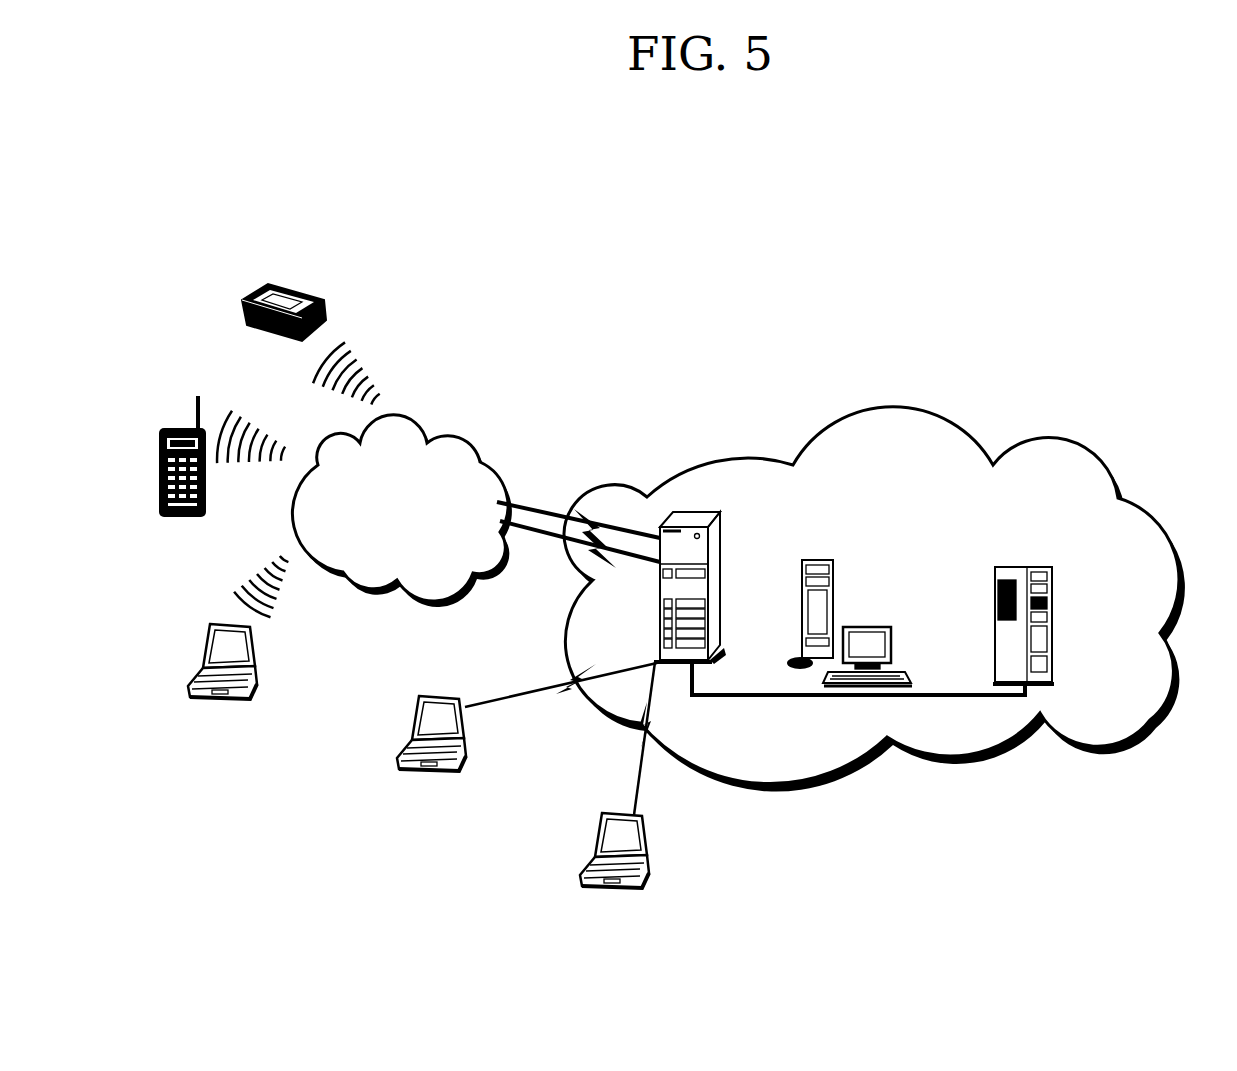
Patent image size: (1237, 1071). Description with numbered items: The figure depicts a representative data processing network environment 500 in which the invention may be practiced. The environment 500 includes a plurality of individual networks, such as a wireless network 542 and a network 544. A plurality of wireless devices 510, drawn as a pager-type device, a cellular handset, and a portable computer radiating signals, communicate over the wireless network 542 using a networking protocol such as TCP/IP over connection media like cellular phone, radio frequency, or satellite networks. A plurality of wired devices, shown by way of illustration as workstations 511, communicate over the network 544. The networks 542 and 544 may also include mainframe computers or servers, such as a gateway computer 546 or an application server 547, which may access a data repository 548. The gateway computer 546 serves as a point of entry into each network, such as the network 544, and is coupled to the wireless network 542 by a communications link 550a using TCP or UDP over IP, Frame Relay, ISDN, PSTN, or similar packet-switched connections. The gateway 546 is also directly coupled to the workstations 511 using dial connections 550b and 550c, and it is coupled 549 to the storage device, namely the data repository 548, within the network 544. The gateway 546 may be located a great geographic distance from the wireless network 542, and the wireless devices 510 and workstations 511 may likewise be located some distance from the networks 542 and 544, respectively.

The data processing network environment 500 is at (716, 226).
The wireless devices 510 is at (265, 528).
The workstations 511 is at (521, 814).
The wireless network 542 is at (401, 504).
The network 544 is at (874, 590).
The gateway computer 546 is at (727, 568).
The application server 547 is at (849, 608).
The data repository 548 is at (1050, 625).
The coupling 549 is at (858, 692).
The communications link 550a is at (577, 496).
The communications link 550b is at (561, 718).
The communications link 550c is at (672, 738).